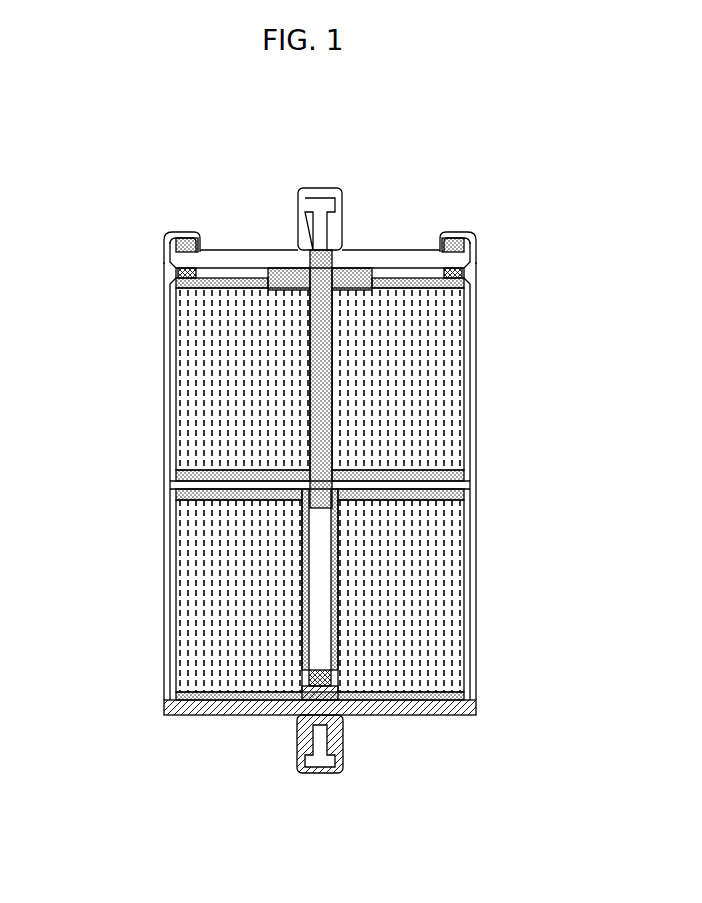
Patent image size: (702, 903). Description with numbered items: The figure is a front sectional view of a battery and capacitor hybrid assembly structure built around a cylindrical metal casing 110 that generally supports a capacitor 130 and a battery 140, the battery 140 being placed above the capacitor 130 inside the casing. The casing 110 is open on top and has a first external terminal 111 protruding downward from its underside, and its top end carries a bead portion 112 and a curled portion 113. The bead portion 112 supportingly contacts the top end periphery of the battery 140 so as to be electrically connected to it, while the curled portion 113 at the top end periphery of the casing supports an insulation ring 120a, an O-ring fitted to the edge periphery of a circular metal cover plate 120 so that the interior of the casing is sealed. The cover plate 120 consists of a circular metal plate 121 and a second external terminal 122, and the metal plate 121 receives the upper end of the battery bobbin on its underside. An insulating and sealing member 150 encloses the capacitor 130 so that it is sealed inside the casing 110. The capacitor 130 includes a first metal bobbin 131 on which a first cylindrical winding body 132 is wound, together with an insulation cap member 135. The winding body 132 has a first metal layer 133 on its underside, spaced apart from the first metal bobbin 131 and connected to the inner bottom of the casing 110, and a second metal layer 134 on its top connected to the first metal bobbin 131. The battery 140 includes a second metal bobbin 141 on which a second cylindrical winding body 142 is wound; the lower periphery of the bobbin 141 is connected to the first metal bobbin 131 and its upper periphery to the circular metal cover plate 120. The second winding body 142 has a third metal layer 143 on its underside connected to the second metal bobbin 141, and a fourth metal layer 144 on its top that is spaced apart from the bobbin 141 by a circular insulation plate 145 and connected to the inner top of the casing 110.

The cylindrical metal casing 110 is at (163, 480).
The first external terminal 111 is at (305, 748).
The bead portion 112 is at (180, 273).
The curled portion 113 is at (168, 233).
The circular metal cover plate 120 is at (320, 221).
The insulation ring 120a is at (186, 240).
The circular metal plate 121 is at (386, 262).
The second external terminal 122 is at (341, 208).
The capacitor 130 is at (269, 604).
The first metal bobbin 131 is at (306, 552).
The first cylindrical winding body 132 is at (196, 660).
The first metal layer 133 is at (180, 702).
The second metal layer 134 is at (216, 500).
The insulation cap member 135 is at (330, 676).
The battery 140 is at (277, 379).
The second metal bobbin 141 is at (320, 345).
The second cylindrical winding body 142 is at (196, 405).
The third metal layer 143 is at (204, 478).
The fourth metal layer 144 is at (215, 285).
The circular insulation plate 145 is at (276, 278).
The insulating and sealing member 150 is at (200, 485).